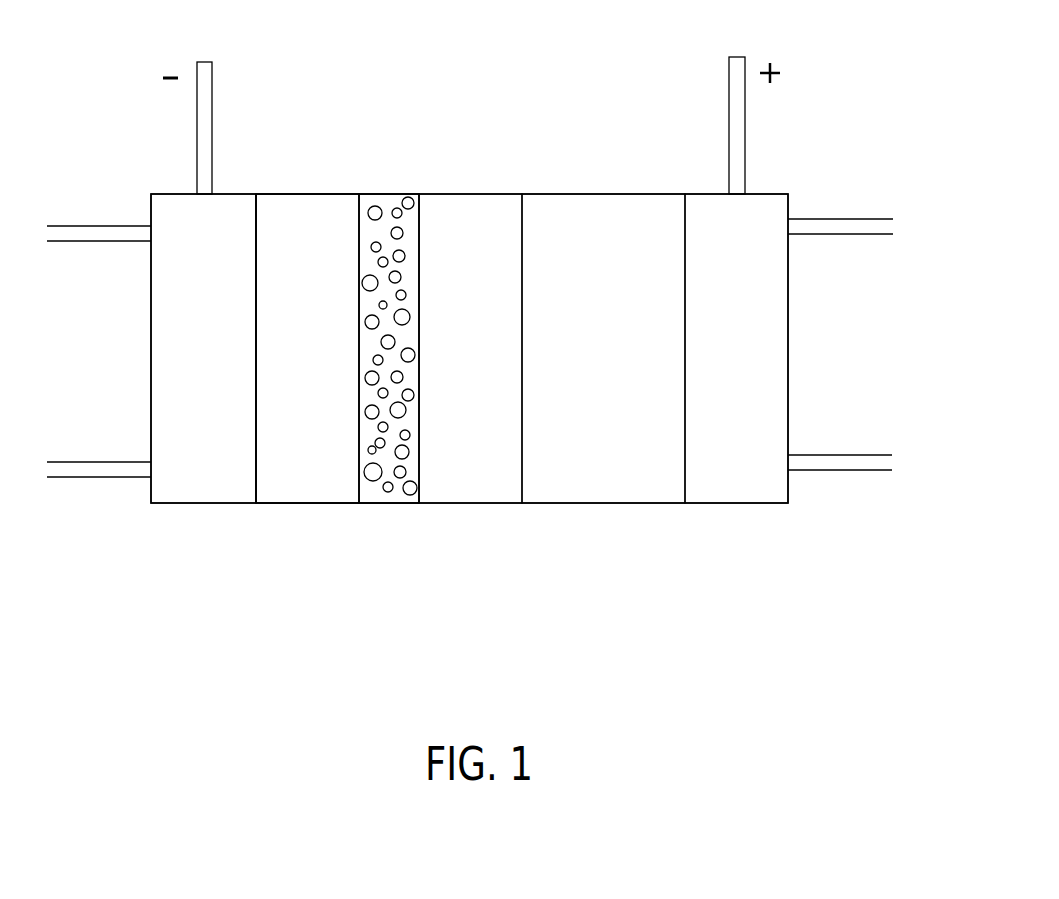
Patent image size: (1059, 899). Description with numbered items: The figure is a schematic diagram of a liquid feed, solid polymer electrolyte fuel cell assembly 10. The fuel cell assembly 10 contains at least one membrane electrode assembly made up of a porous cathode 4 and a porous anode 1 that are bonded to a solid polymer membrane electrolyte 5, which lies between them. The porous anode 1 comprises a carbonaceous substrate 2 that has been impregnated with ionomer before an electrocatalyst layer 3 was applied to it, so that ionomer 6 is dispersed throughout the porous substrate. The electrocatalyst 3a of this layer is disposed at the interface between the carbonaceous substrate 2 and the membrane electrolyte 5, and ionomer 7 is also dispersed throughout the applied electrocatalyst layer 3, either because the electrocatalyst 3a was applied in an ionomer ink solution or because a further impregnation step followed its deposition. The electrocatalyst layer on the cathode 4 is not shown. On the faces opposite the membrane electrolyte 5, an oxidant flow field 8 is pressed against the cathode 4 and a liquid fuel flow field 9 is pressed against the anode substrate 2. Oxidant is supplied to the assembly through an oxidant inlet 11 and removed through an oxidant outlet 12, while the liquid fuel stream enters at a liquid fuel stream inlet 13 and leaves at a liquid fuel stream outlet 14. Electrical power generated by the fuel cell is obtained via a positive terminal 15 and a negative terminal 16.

The porous anode 1 is at (256, 516).
The carbonaceous substrate 2 is at (286, 225).
The electrocatalyst layer 3 is at (389, 170).
The electrocatalyst 3a is at (377, 475).
The porous cathode 4 is at (685, 516).
The solid polymer membrane electrolyte 5 is at (472, 472).
The ionomer 6 is at (332, 240).
The ionomer 7 is at (372, 340).
The oxidant flow field 8 is at (723, 473).
The liquid fuel flow field 9 is at (210, 478).
The fuel cell assembly 10 is at (818, 96).
The oxidant inlet 11 is at (848, 227).
The oxidant outlet 12 is at (848, 463).
The liquid fuel stream inlet 13 is at (98, 232).
The liquid fuel stream outlet 14 is at (100, 468).
The positive terminal 15 is at (737, 110).
The negative terminal 16 is at (204, 113).